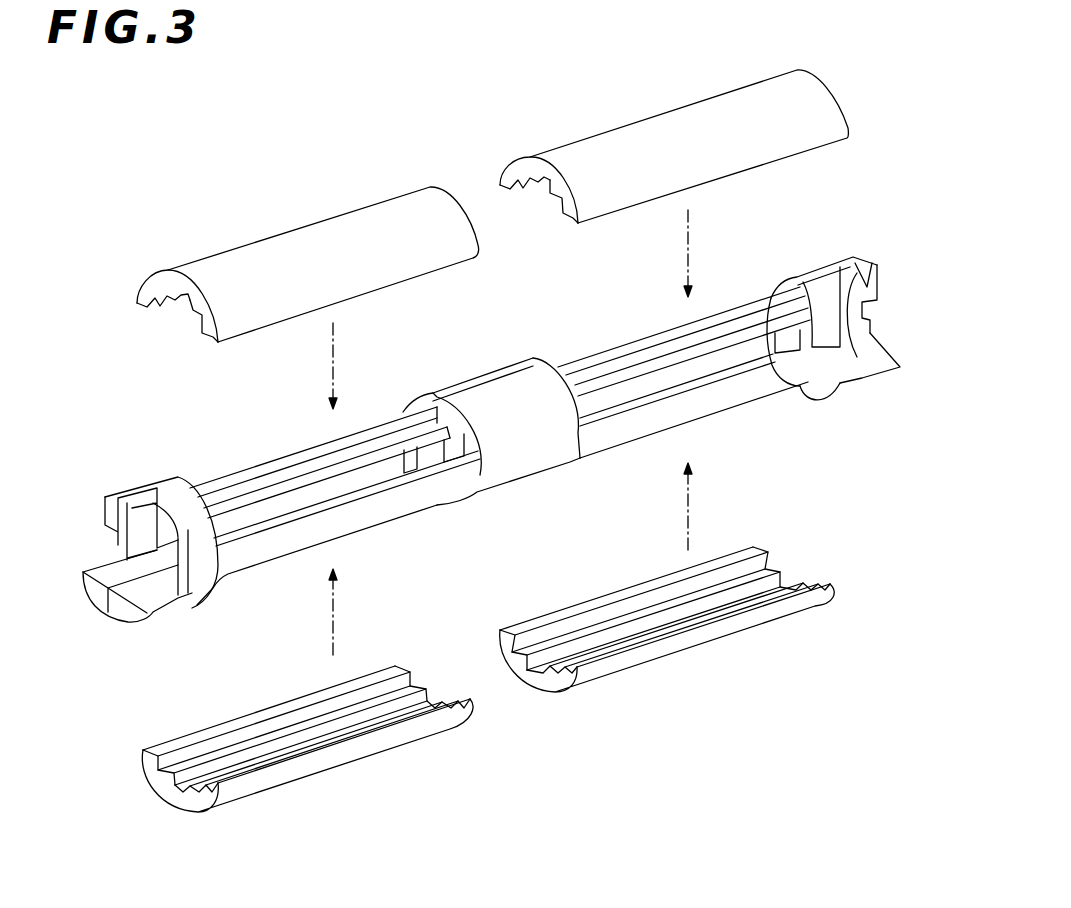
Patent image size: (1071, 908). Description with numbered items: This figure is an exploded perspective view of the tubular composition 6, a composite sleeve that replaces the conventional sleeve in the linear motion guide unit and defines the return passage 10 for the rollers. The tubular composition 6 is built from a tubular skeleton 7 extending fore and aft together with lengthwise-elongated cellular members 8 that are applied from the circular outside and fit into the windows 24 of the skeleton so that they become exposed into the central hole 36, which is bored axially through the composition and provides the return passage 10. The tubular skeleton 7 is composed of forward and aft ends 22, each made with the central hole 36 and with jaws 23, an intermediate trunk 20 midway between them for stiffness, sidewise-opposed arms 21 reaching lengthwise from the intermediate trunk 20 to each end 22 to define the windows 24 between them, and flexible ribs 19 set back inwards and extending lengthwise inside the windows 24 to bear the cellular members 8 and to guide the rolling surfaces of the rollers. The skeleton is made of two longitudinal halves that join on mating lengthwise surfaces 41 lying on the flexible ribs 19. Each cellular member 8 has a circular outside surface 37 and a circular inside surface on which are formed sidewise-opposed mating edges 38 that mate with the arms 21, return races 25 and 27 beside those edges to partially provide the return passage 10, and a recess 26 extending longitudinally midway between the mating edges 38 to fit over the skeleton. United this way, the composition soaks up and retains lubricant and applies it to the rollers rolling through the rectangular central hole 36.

The tubular composition 6 is at (843, 210).
The tubular skeleton 7 is at (803, 385).
The cellular member 8 is at (353, 240).
The return passage 10 is at (112, 543).
The flexible rib 19 is at (247, 480).
The intermediate trunk 20 is at (522, 457).
The arm 21 is at (368, 522).
The forward and aft end 22 is at (855, 357).
The jaw 23 is at (110, 573).
The window 24 is at (343, 480).
The return race 25 is at (558, 212).
The recess 26 is at (175, 300).
The return race 27 is at (192, 313).
The central hole 36 is at (273, 507).
The outer surface 37 is at (278, 262).
The mating edge 38 is at (138, 306).
The mating lengthwise surface 41 is at (500, 370).